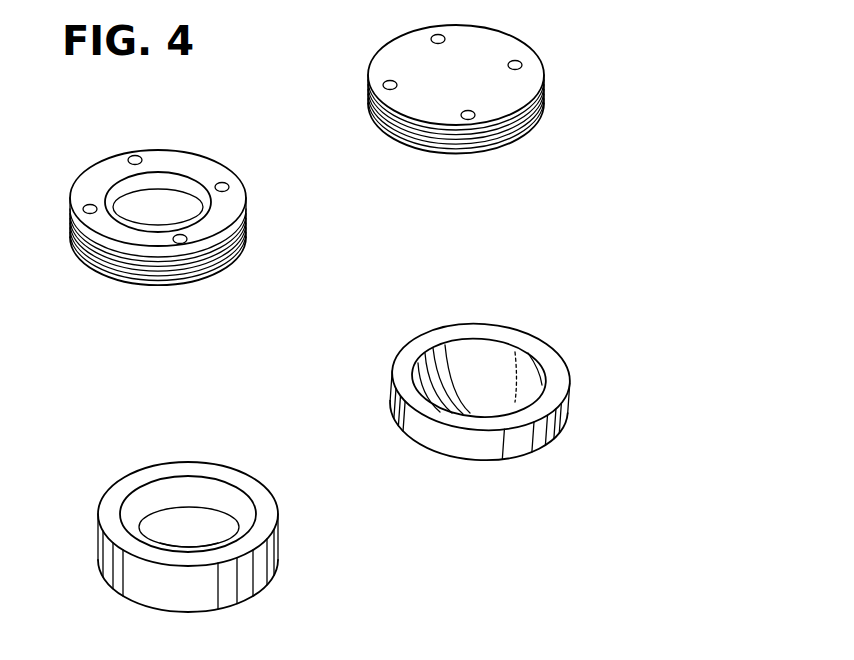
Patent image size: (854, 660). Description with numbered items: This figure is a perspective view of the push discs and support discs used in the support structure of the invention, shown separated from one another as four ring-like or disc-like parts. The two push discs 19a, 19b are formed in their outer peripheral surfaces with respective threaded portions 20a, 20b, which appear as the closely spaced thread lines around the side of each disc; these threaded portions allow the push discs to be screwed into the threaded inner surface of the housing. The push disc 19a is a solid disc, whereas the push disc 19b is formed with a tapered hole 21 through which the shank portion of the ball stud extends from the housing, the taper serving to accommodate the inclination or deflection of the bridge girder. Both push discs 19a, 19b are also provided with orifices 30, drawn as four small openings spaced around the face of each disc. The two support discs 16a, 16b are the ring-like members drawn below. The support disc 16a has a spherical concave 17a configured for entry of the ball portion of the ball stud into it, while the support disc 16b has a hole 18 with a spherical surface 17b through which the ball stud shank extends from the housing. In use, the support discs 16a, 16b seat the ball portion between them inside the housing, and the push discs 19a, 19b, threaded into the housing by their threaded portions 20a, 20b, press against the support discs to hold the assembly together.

The support disc 16a is at (498, 445).
The support disc 16b is at (273, 550).
The spherical concave 17a is at (527, 370).
The spherical surface 17b is at (210, 492).
The hole 18 is at (223, 530).
The push disc 19a is at (425, 113).
The push disc 19b is at (222, 222).
The threaded portion 20a is at (522, 123).
The threaded portion 20b is at (220, 253).
The tapered hole 21 is at (164, 180).
The orifices 30 is at (84, 207).